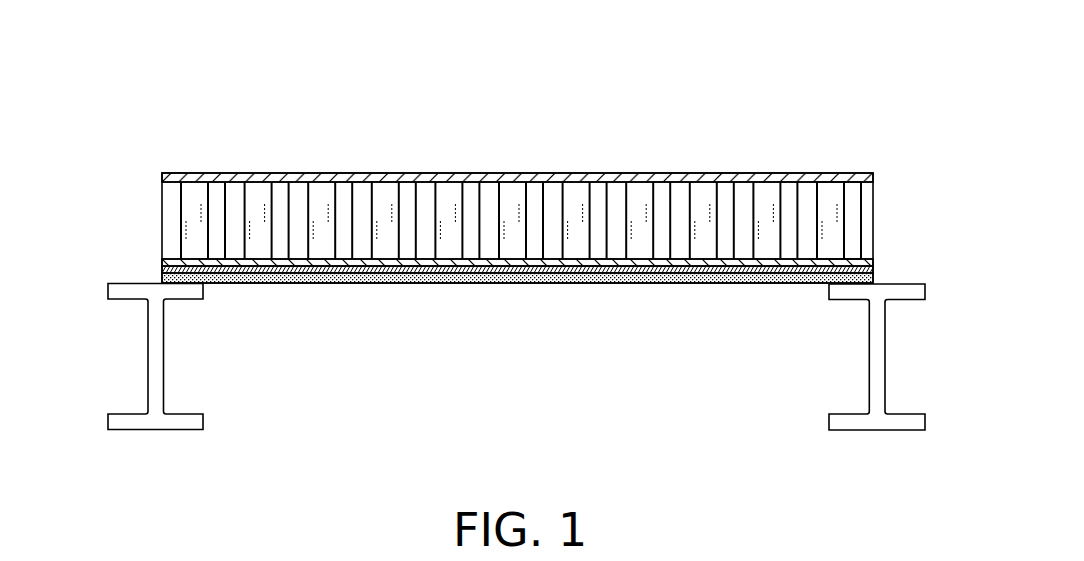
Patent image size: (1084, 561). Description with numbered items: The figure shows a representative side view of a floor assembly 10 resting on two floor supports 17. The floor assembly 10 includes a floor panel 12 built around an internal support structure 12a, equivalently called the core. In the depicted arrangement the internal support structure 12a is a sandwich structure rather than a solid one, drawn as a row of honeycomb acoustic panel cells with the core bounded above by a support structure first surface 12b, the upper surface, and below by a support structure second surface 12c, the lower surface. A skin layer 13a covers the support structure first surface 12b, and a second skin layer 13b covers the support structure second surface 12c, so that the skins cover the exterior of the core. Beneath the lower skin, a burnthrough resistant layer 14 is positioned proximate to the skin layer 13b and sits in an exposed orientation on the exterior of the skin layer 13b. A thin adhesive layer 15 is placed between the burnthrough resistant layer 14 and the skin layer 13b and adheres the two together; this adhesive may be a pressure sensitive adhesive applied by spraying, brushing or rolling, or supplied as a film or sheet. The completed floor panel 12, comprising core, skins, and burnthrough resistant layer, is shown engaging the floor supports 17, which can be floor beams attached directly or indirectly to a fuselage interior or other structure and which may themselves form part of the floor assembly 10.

The floor assembly 10 is at (664, 145).
The floor panel 12 is at (98, 163).
The internal support structure 12a is at (850, 214).
The support structure first surface 12b is at (837, 182).
The support structure second surface 12c is at (830, 257).
The skin layer 13a is at (271, 173).
The skin layer 13b is at (338, 265).
The burnthrough resistant layer 14 is at (441, 272).
The adhesive layer 15 is at (537, 278).
The floor supports 17 is at (164, 355).